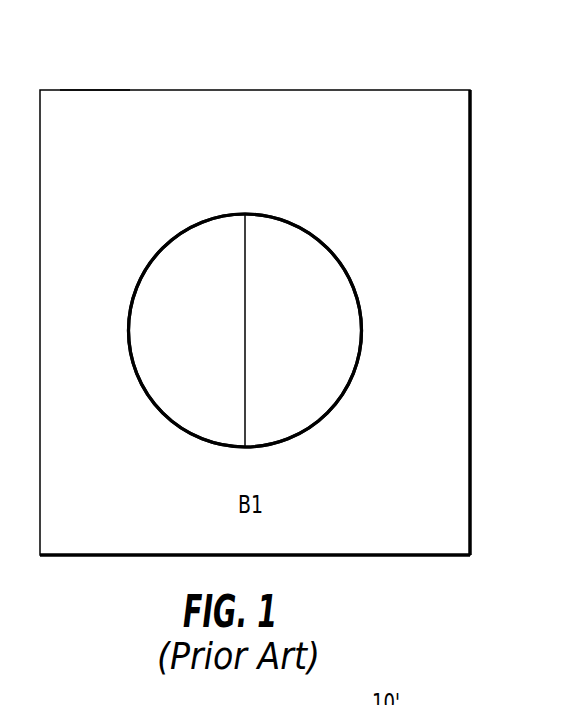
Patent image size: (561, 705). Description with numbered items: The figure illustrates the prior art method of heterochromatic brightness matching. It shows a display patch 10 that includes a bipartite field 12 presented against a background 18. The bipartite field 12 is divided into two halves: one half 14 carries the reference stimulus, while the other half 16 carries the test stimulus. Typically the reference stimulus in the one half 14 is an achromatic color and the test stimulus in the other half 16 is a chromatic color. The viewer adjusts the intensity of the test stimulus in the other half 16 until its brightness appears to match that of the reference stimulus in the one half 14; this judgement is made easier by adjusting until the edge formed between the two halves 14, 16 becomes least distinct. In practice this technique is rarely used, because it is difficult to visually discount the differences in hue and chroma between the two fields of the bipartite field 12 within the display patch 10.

The display patch 10 is at (313, 72).
The bipartite field 12 is at (275, 208).
The one half 14 is at (168, 392).
The other half 16 is at (318, 400).
The background 18 is at (95, 102).